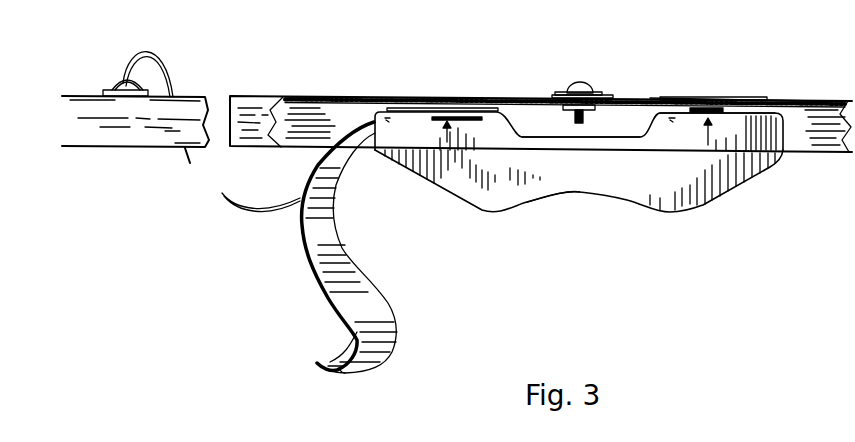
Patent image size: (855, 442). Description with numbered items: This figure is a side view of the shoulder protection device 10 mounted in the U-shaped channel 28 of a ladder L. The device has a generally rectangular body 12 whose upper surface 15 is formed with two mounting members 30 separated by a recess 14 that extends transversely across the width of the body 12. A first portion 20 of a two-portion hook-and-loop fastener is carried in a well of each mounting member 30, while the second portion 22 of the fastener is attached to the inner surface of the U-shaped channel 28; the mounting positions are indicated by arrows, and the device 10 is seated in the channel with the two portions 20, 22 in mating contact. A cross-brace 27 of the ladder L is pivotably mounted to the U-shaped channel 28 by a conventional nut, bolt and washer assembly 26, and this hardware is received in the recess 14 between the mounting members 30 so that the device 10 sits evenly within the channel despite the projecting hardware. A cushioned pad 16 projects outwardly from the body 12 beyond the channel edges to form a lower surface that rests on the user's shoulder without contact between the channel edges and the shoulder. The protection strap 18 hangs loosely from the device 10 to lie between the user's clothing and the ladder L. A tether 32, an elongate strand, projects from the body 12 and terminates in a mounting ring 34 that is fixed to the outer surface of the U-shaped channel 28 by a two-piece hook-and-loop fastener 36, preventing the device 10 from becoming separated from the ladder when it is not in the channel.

The shoulder protection device 10 is at (686, 245).
The body 12 is at (400, 118).
The recess 14 is at (553, 140).
The upper surface 15 is at (533, 122).
The cushioned pad 16 is at (453, 175).
The protection strap 18 is at (357, 330).
The first portion of Velcro fastener 20 is at (725, 98).
The second portion of Velcro fastener 22 is at (705, 108).
The nut, bolt and washer assembly 26 is at (586, 85).
The cross-brace 27 is at (660, 99).
The U-shaped channel 28 is at (322, 105).
The mounting member 30 is at (664, 118).
The tether 32 is at (247, 207).
The mounting ring 34 is at (118, 85).
The two-piece Velcro fastener 36 is at (143, 83).
The ladder L is at (258, 100).